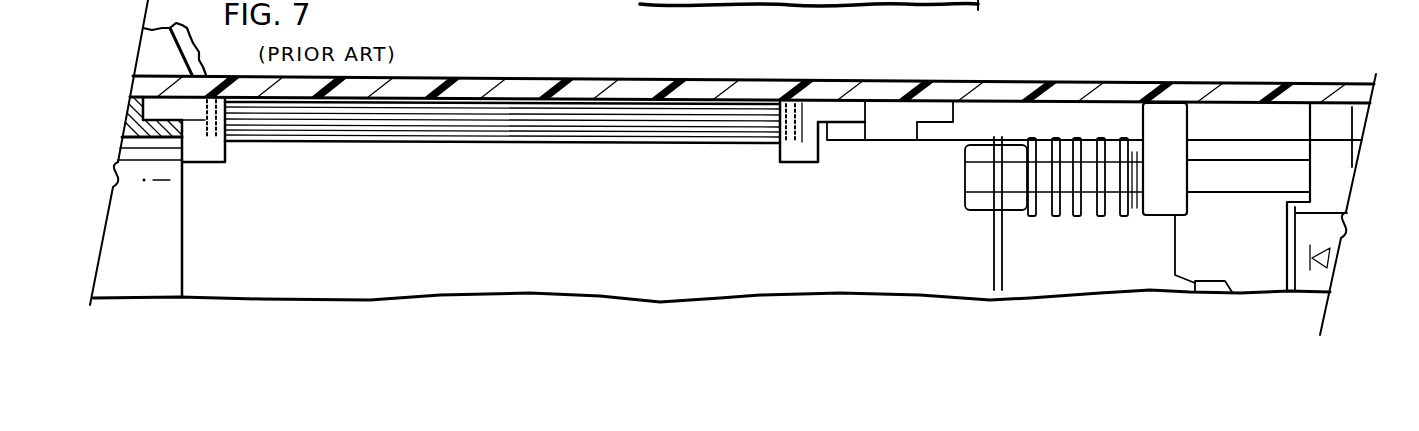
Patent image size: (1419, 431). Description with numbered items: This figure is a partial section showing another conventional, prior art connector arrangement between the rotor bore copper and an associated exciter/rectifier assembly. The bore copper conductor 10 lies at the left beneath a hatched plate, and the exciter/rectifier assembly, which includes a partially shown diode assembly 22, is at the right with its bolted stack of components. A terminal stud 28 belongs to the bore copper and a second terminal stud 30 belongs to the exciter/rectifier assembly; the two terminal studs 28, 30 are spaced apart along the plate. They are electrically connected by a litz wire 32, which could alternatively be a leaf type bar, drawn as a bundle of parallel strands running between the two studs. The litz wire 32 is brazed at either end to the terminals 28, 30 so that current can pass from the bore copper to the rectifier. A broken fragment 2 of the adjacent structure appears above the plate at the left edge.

The wall fragment 2 is at (158, 42).
The bore copper conductor 10 is at (114, 144).
The diode assembly 22 is at (953, 160).
The terminal stud 28 is at (203, 163).
The terminal stud 30 is at (797, 163).
The litz wire 32 is at (423, 140).